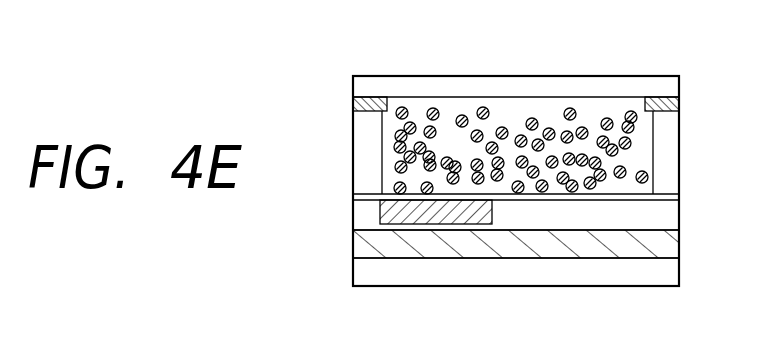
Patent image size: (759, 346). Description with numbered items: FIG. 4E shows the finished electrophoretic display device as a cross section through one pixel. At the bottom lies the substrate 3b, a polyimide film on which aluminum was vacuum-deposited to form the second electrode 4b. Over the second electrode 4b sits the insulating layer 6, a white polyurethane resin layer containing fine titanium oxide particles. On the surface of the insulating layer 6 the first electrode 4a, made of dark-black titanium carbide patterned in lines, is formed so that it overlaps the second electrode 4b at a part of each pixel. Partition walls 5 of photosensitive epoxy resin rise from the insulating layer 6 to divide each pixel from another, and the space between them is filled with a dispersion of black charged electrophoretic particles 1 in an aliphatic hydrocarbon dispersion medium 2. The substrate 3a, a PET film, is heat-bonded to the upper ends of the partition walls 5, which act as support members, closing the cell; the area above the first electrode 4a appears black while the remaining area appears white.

The charged electrophoretic particles 1 is at (434, 112).
The dispersion medium 2 is at (512, 112).
The substrate 3a is at (658, 86).
The substrate 3b is at (665, 273).
The first electrode 4a is at (418, 210).
The second electrode 4b is at (665, 246).
The partition walls 5 is at (660, 131).
The insulating layer 6 is at (662, 213).